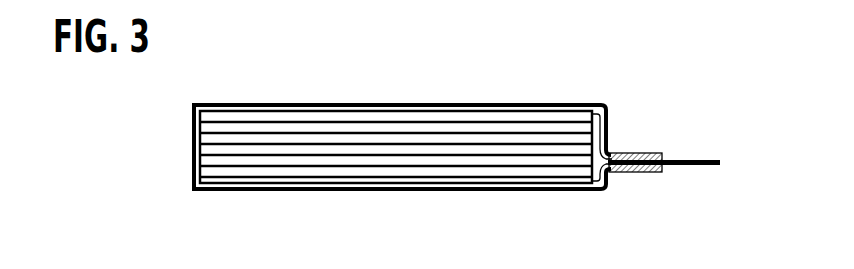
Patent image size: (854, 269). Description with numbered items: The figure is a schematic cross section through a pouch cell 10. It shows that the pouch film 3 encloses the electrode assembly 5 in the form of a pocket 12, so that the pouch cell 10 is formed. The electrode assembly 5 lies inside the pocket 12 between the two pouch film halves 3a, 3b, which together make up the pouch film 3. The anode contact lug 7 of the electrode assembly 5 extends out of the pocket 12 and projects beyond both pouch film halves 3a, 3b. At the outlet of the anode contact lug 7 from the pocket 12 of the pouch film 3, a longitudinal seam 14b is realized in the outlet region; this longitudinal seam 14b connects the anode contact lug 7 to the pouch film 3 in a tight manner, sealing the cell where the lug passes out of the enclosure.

The pouch cell 10 is at (282, 100).
The pouch film 3 is at (610, 103).
The pouch film half 3a is at (337, 102).
The pouch film half 3b is at (318, 192).
The electrode assembly 5 is at (398, 122).
The pocket 12 is at (609, 184).
The longitudinal seam 14b is at (640, 153).
The anode contact lug 7 is at (708, 160).